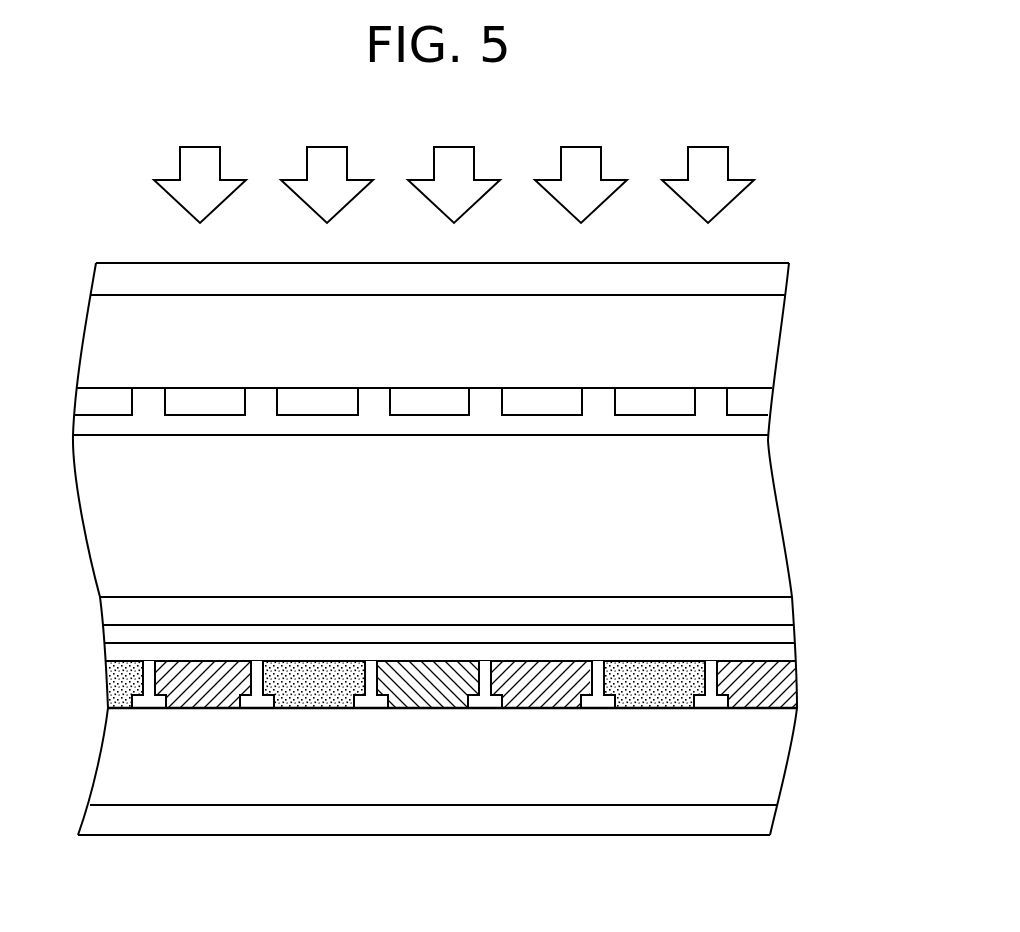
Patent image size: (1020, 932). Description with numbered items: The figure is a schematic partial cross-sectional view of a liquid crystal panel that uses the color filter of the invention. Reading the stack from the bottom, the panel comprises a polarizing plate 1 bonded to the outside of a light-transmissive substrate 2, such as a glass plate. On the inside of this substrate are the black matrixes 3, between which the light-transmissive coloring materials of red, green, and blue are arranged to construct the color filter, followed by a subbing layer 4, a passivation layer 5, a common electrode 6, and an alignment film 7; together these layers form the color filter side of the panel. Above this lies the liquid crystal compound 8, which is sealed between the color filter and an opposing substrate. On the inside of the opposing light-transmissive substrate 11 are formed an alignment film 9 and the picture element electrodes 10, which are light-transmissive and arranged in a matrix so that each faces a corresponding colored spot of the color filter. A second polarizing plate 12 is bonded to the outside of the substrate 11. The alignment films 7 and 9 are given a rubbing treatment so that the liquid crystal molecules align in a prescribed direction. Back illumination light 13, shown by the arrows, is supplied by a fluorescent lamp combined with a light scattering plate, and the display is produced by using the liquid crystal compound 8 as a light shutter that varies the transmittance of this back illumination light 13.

The polarizing plate 1 is at (762, 818).
The light-transmissive substrate 2 is at (772, 763).
The black matrixes 3 is at (715, 711).
The subbing layer 4 is at (782, 683).
The passivation layer 5 is at (780, 657).
The common electrode 6 is at (778, 632).
The alignment film 7 is at (778, 606).
The liquid crystal compound 8 is at (762, 503).
The alignment film 9 is at (757, 425).
The picture element electrodes 10 is at (757, 400).
The light-transmissive substrate 11 is at (762, 337).
The polarizing plate 12 is at (772, 281).
The back illumination light 13 is at (735, 200).